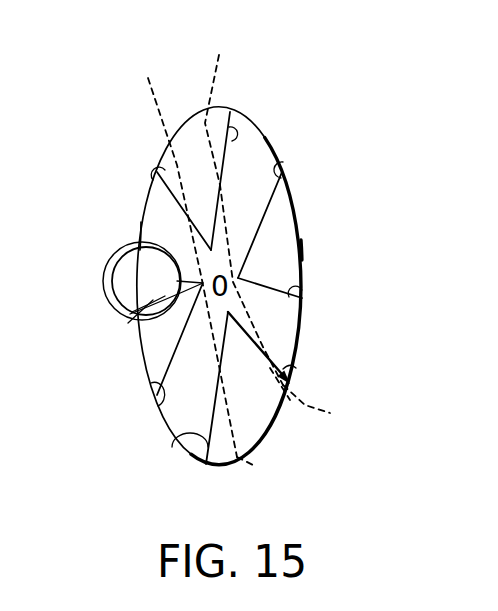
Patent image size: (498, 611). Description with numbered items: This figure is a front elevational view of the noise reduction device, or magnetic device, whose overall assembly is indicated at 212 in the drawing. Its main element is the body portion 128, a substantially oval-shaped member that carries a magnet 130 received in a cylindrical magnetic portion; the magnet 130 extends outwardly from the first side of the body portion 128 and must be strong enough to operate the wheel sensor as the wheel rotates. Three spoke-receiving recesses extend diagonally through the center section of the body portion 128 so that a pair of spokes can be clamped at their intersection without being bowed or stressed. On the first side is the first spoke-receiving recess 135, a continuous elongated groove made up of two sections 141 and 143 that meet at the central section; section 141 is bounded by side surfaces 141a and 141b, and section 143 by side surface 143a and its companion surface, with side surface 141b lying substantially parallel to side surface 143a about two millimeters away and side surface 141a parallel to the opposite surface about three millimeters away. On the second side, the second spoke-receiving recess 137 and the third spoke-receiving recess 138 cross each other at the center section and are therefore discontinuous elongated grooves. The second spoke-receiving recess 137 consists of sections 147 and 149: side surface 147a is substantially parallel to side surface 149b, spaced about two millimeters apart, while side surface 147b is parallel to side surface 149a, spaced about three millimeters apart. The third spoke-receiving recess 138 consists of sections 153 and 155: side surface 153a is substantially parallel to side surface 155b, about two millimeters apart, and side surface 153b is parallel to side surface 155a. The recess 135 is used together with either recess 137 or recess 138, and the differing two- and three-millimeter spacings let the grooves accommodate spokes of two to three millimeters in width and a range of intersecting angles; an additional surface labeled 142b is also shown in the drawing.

The frame assembly 212 is at (282, 239).
The second spoke-receiving recess 137 is at (278, 128).
The body portion 128 is at (310, 203).
The third spoke-receiving recess 138 is at (133, 215).
The magnet 130 is at (122, 265).
The section 147 is at (271, 235).
The side surface 147a is at (238, 134).
The side surface 147b is at (279, 156).
The section 153 is at (156, 168).
The side surface 153a is at (160, 181).
The side surface 153b is at (142, 351).
The section 155 is at (289, 278).
The side surface 155a is at (304, 312).
The side surface 155b is at (283, 370).
The section 149 is at (162, 354).
The side surface 149a is at (155, 408).
The side surface 149b is at (172, 446).
The first spoke-receiving recess 135 is at (178, 80).
The section 141 is at (228, 110).
The side surface 141a is at (177, 254).
The side surface 141b is at (235, 207).
The section 143 is at (330, 413).
The side surface 143a is at (255, 466).
The motion path 142b is at (290, 400).